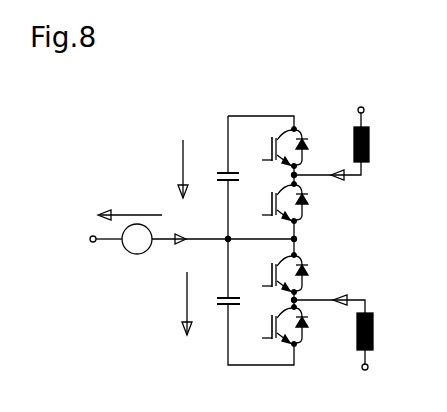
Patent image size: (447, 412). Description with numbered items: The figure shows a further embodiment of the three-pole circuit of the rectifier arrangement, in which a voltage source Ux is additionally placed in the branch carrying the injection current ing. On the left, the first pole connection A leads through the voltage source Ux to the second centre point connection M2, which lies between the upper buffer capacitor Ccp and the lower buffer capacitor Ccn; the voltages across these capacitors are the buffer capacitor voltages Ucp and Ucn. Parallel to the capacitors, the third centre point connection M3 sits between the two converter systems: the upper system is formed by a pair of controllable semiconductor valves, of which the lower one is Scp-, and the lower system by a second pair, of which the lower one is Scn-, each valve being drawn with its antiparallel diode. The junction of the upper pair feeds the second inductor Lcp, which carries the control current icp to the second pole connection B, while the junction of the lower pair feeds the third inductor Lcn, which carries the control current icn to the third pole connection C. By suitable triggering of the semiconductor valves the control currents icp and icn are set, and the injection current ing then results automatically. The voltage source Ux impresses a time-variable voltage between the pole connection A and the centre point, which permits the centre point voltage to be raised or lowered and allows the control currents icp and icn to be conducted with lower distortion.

The first pole connection A is at (102, 250).
The second pole connection B is at (368, 104).
The third pole connection C is at (372, 376).
The voltage source Ux is at (163, 221).
The injection current ing is at (185, 231).
The second centre point connection M2 is at (239, 231).
The third centre point connection M3 is at (277, 241).
The buffer capacitor voltage Ucp is at (172, 169).
The buffer capacitor voltage Ucn is at (175, 303).
The buffer capacitor Ccp is at (217, 167).
The buffer capacitor Ccn is at (220, 288).
The controllable semiconductor valve Scp- is at (270, 203).
The controllable semiconductor valve Scn- is at (272, 326).
The control current icp is at (327, 185).
The control current icn is at (329, 295).
The second inductor Lcp is at (376, 137).
The third inductor Lcn is at (378, 338).